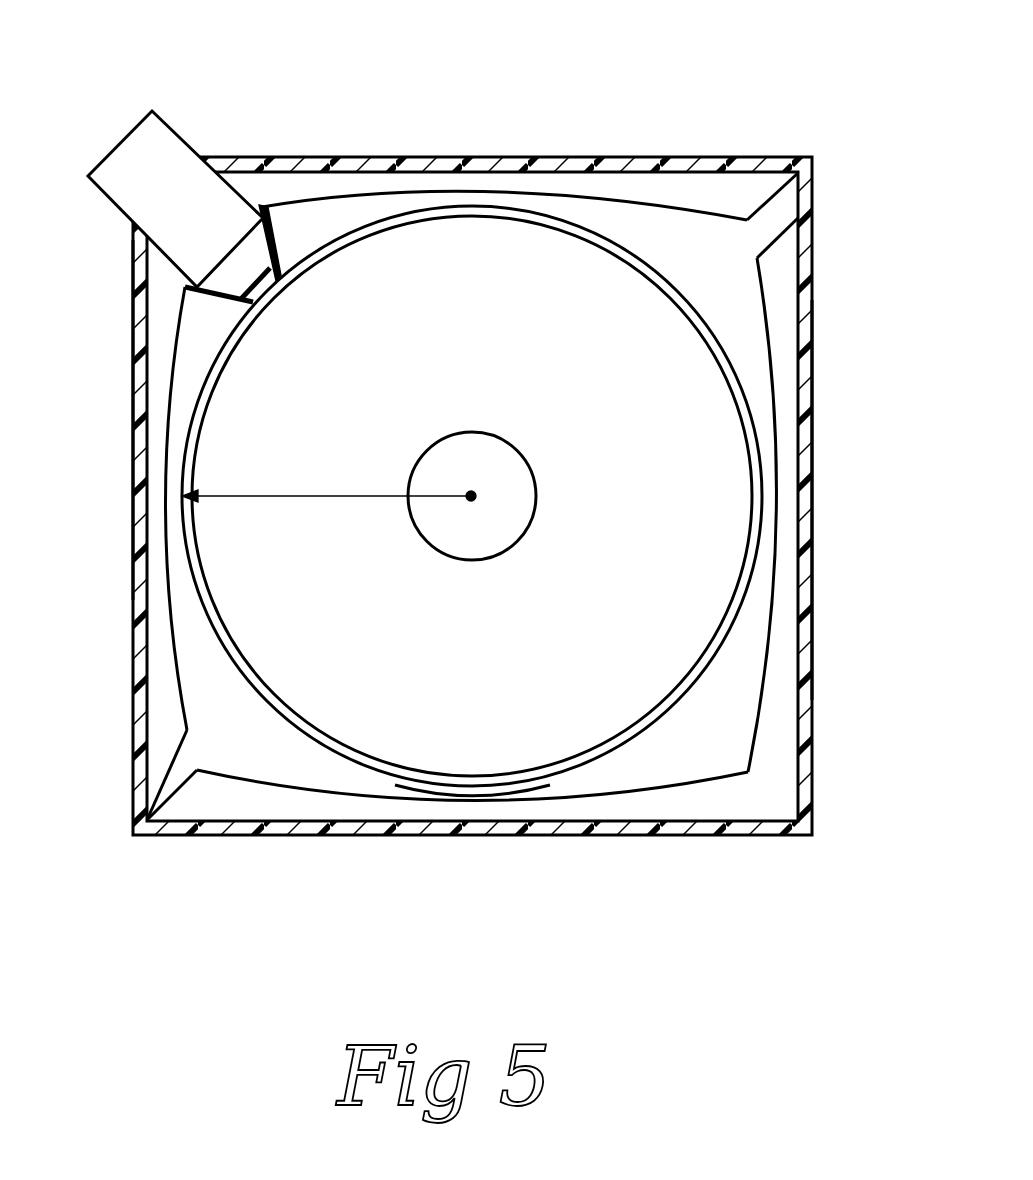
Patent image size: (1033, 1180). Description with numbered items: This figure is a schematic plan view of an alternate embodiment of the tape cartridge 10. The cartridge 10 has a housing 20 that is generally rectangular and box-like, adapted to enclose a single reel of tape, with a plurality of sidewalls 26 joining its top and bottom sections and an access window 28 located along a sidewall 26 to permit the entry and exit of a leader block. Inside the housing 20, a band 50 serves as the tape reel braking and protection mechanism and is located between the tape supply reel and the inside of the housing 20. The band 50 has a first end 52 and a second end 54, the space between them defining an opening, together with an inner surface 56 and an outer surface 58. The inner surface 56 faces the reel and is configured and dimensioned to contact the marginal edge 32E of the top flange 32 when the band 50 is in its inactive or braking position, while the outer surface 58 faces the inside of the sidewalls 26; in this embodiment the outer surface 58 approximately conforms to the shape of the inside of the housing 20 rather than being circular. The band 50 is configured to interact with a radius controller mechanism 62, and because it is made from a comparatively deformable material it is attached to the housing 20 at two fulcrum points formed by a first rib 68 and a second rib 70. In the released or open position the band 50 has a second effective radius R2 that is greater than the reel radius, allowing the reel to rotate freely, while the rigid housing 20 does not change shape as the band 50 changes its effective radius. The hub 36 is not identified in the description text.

The cartridge 10 is at (656, 69).
The housing 20 is at (814, 524).
The sidewalls 26 is at (815, 625).
The access window 28 is at (137, 233).
The top flange 32 is at (458, 774).
The marginal edge of top flange 32E is at (405, 768).
The hub 36 is at (515, 510).
The band 50 is at (738, 705).
The first end 52 is at (282, 237).
The second end 54 is at (185, 318).
The inner surface 56 is at (195, 410).
The outer surface 58 is at (653, 790).
The radius controller mechanism 62 is at (130, 145).
The first rib 68 is at (780, 215).
The second rib 70 is at (167, 773).
The second effective radius R2 is at (326, 479).